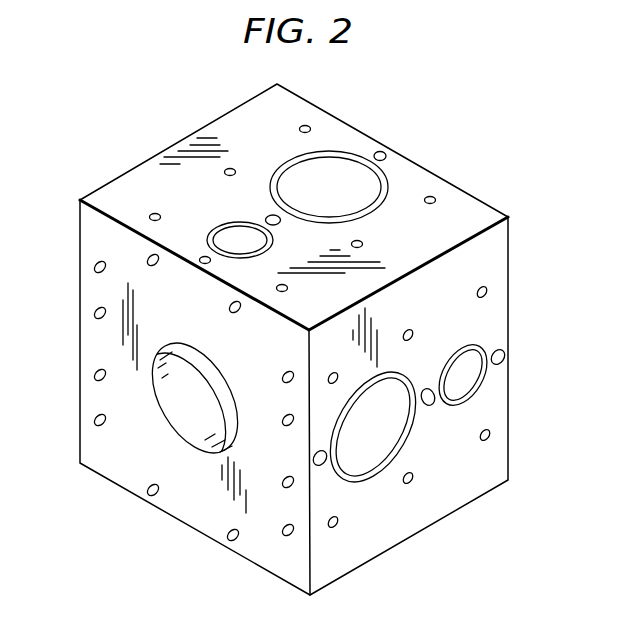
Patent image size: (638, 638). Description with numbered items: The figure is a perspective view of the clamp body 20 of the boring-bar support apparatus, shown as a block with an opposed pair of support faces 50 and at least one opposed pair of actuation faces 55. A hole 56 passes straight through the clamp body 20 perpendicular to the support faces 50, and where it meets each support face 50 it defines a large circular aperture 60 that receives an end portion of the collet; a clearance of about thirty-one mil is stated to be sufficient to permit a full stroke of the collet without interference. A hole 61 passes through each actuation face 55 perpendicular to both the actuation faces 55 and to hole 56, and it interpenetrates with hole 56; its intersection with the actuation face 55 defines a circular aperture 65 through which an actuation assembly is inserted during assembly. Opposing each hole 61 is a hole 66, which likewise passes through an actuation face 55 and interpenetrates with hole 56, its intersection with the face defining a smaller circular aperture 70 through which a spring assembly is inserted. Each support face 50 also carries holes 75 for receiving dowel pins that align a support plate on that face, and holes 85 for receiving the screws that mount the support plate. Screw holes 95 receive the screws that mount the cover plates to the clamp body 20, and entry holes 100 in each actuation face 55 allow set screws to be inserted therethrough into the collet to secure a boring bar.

The clamp body 20 is at (551, 451).
The support faces 50 is at (197, 511).
The actuation faces 55 is at (487, 215).
The hole 56 is at (178, 412).
The circular aperture 60 is at (160, 352).
The hole 61 is at (394, 424).
The circular aperture 65 is at (337, 152).
The hole 66 is at (471, 363).
The circular aperture 70 is at (235, 238).
The holes 75 is at (96, 311).
The holes 85 is at (148, 260).
The screw holes 95 is at (230, 169).
The entry holes 100 is at (383, 154).